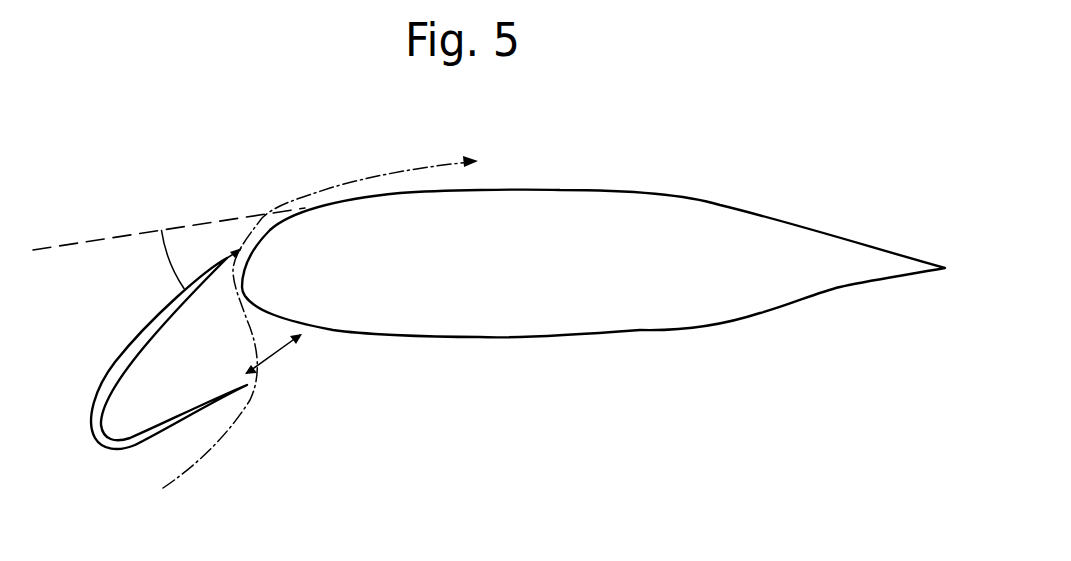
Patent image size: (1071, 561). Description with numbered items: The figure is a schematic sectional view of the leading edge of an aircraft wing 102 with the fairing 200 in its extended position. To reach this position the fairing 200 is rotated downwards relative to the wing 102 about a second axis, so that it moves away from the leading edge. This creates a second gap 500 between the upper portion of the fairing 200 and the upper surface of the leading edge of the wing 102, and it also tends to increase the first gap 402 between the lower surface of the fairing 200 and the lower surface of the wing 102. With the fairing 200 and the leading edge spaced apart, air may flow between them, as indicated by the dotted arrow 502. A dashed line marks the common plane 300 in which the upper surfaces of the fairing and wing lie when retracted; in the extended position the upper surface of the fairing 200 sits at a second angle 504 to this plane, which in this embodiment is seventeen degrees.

The aircraft wing 102 is at (503, 320).
The fairing 200 is at (117, 447).
The common plane 300 is at (127, 232).
The first gap 402 is at (277, 357).
The second gap 500 is at (258, 239).
The air flow arrow 502 is at (407, 168).
The second angle 504 is at (167, 265).